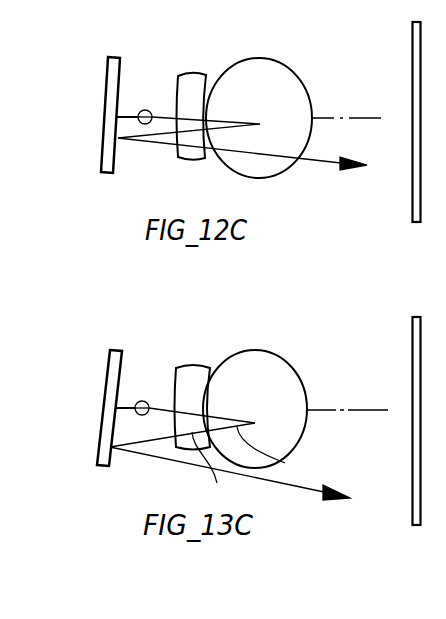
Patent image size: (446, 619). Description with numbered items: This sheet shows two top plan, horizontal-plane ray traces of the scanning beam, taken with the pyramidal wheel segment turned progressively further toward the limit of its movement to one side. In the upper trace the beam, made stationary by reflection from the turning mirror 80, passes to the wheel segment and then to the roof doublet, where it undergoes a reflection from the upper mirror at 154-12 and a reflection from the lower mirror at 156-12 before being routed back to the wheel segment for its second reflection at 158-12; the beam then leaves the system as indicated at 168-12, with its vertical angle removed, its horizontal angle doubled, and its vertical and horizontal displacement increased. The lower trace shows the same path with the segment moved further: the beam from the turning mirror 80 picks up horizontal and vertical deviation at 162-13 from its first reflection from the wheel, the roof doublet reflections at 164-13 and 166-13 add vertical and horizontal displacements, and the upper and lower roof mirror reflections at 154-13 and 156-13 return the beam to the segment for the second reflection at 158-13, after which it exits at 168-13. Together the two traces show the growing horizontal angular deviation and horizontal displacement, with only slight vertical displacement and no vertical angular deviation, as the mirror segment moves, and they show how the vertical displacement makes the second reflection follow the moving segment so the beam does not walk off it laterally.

In FIG. 12C, the turning mirror 80 is at (145, 109).
In FIG. 13C, the turning mirror 80 is at (150, 387).
In FIG. 12C, the reflection from the upper mirror of the roof doublet 154-12 is at (260, 124).
In FIG. 12C, the reflection from the lower mirror of the roof doublet 156-12 is at (193, 127).
In FIG. 12C, the second reflection from the wheel segment 158-12 is at (118, 138).
In FIG. 12C, the output beam with vertical angle removed and horizontal angle doubled 168-12 is at (313, 162).
In FIG. 13C, the reflection from the upper mirror of the roof doublet 154-13 is at (255, 423).
In FIG. 13C, the reflection from the lower mirror of the roof doublet 156-13 is at (236, 469).
In FIG. 13C, the second reflection from the wheel segment 158-13 is at (113, 467).
In FIG. 13C, the deviation added by first reflection from wheel 162-13 is at (168, 413).
In FIG. 13C, the roof doublet reflection adding displacements 164-13 is at (295, 454).
In FIG. 13C, the roof doublet reflection adding displacements 166-13 is at (148, 453).
In FIG. 13C, the output beam with vertical angle removed and horizontal angle doubled 168-13 is at (307, 493).